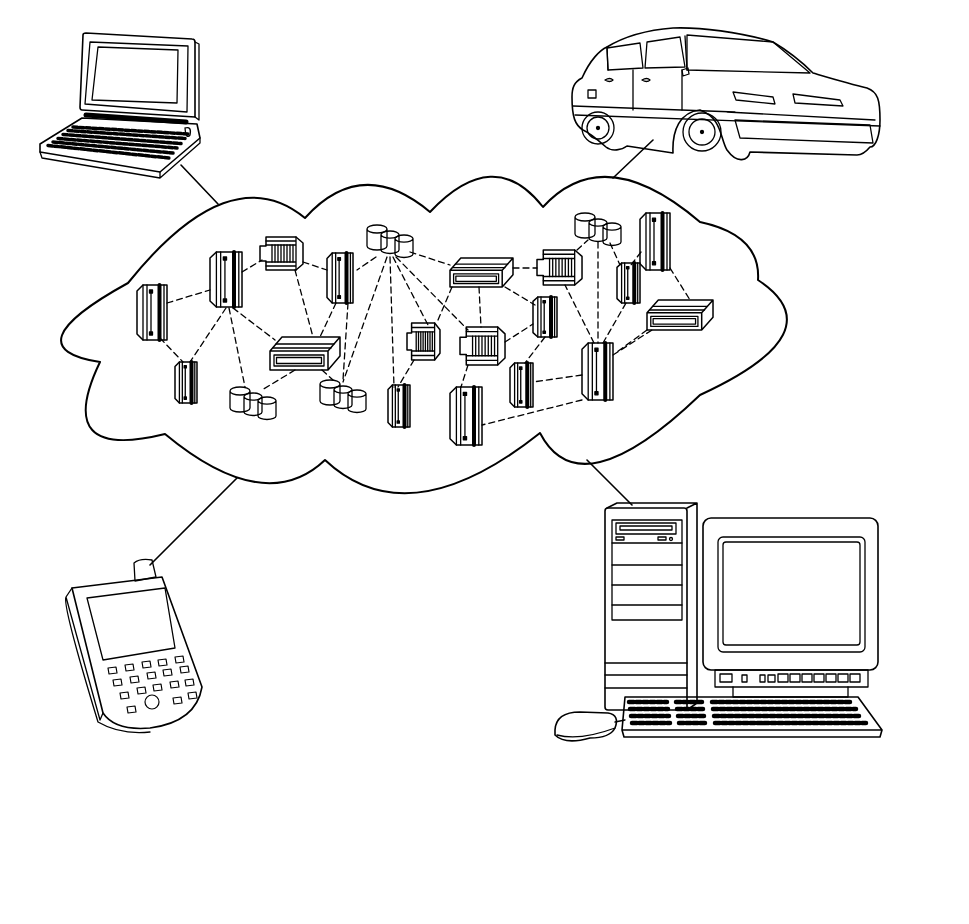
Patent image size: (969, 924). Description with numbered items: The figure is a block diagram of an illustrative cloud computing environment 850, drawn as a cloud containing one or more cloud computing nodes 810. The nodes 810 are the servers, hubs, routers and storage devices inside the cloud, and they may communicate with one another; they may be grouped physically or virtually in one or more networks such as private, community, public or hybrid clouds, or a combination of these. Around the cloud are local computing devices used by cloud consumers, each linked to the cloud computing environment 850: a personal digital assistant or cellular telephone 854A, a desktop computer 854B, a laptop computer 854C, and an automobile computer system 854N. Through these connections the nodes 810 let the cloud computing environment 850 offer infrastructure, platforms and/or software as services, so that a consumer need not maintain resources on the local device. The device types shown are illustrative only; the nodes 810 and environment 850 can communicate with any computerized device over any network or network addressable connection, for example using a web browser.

The cloud computing nodes 810 is at (740, 336).
The cloud computing environment 850 is at (762, 276).
The personal digital assistant or cellular telephone 854A is at (185, 633).
The desktop computer 854B is at (603, 615).
The laptop computer 854C is at (195, 80).
The automobile computer system 854N is at (582, 86).